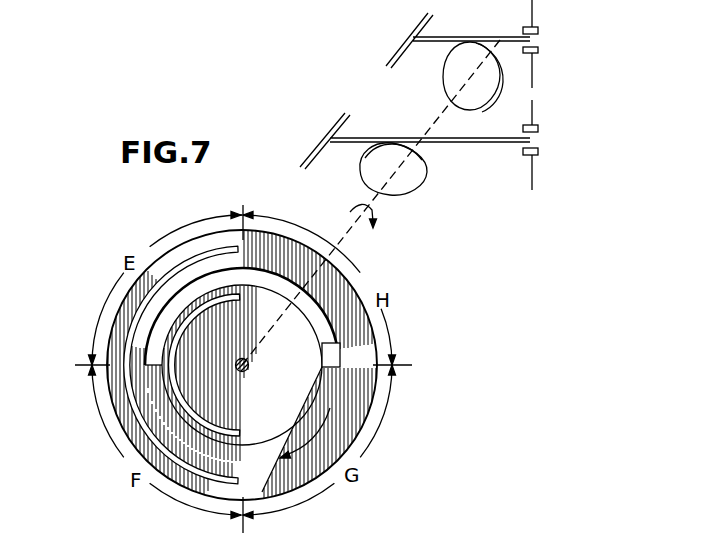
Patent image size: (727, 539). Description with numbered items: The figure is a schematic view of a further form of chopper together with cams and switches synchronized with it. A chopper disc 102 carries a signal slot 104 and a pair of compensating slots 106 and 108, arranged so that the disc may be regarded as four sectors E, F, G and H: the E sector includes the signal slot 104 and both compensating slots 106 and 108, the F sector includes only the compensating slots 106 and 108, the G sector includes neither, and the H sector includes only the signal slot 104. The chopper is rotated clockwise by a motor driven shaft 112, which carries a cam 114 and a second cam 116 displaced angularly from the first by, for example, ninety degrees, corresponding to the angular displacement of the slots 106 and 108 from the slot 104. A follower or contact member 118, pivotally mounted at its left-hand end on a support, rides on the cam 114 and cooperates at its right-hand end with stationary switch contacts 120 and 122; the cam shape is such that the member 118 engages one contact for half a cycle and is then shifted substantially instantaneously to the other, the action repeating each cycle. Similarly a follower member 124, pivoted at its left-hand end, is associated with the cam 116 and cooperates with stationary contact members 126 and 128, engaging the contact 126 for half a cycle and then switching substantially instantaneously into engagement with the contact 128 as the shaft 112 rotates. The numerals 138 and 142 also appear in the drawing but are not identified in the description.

The chopper disc 102 is at (348, 422).
The signal slot 104 is at (340, 349).
The compensating slot 106 is at (203, 475).
The compensating slot 108 is at (194, 414).
The motor driven shaft 112 is at (353, 229).
The cam 114 is at (408, 182).
The cam 116 is at (455, 74).
The follower or contact member 118 is at (508, 142).
The stationary switch contact 120 is at (540, 127).
The stationary switch contact 122 is at (540, 155).
The follower member 124 is at (442, 37).
The stationary contact member 126 is at (538, 28).
The stationary contact member 128 is at (540, 50).
The housing 138 is at (186, 530).
The support 142 is at (377, 538).